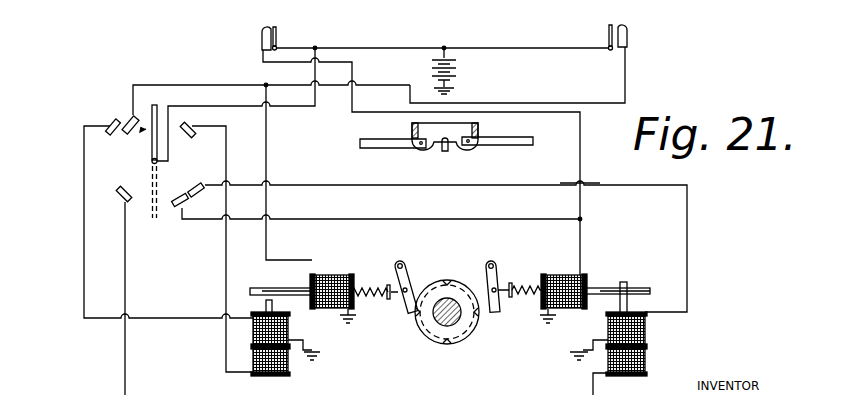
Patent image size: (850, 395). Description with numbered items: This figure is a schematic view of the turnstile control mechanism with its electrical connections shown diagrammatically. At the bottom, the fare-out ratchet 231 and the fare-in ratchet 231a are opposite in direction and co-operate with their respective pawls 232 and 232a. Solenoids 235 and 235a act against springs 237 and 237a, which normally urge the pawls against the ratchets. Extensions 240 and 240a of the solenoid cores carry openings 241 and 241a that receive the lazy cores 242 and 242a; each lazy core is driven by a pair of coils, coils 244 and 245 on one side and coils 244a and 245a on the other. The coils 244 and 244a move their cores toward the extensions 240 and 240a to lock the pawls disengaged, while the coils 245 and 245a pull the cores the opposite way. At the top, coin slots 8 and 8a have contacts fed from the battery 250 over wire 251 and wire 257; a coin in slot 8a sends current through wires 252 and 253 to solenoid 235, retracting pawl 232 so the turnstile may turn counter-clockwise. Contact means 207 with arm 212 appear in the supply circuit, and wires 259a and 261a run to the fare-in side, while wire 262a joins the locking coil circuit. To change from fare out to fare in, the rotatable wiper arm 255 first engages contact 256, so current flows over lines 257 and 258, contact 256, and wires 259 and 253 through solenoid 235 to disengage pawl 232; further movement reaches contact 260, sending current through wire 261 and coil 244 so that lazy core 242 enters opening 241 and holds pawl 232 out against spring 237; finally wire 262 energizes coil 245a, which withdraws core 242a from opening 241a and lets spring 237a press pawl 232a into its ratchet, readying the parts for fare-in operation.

The coin slot 8 is at (266, 28).
The coin slot 8a is at (626, 24).
The line 257 is at (386, 38).
The wire 251 is at (552, 38).
The battery 250 is at (458, 70).
The wire 252 is at (503, 102).
The wire 259 is at (200, 84).
The line 258 is at (290, 108).
The contact 256 is at (132, 115).
The contact 260 is at (108, 122).
The rotatable wiper arm 255 is at (150, 157).
The wire 261 is at (84, 220).
The wire 262 is at (126, 296).
The conductor 262a is at (226, 268).
The conductor 259a is at (456, 216).
The conductor 261a is at (518, 180).
The wire 253 is at (266, 242).
The switch 207 is at (485, 130).
The switch arm 212 is at (412, 150).
The solenoid 235 is at (336, 275).
The spring 237 is at (380, 300).
The extension 240 is at (256, 288).
The opening 241 is at (295, 284).
The lazy core 242 is at (266, 306).
The coil 244 is at (288, 328).
The coil 245 is at (288, 370).
The pawl 232 is at (413, 280).
The ratchet 231 is at (432, 377).
The ratchet 231a is at (427, 338).
The pawl 232a is at (500, 280).
The spring 237a is at (524, 302).
The solenoid 235a is at (563, 298).
The extension 240a is at (650, 290).
The opening 241a is at (618, 290).
The lazy core 242a is at (630, 288).
The coil 244a is at (646, 328).
The coil 245a is at (646, 358).